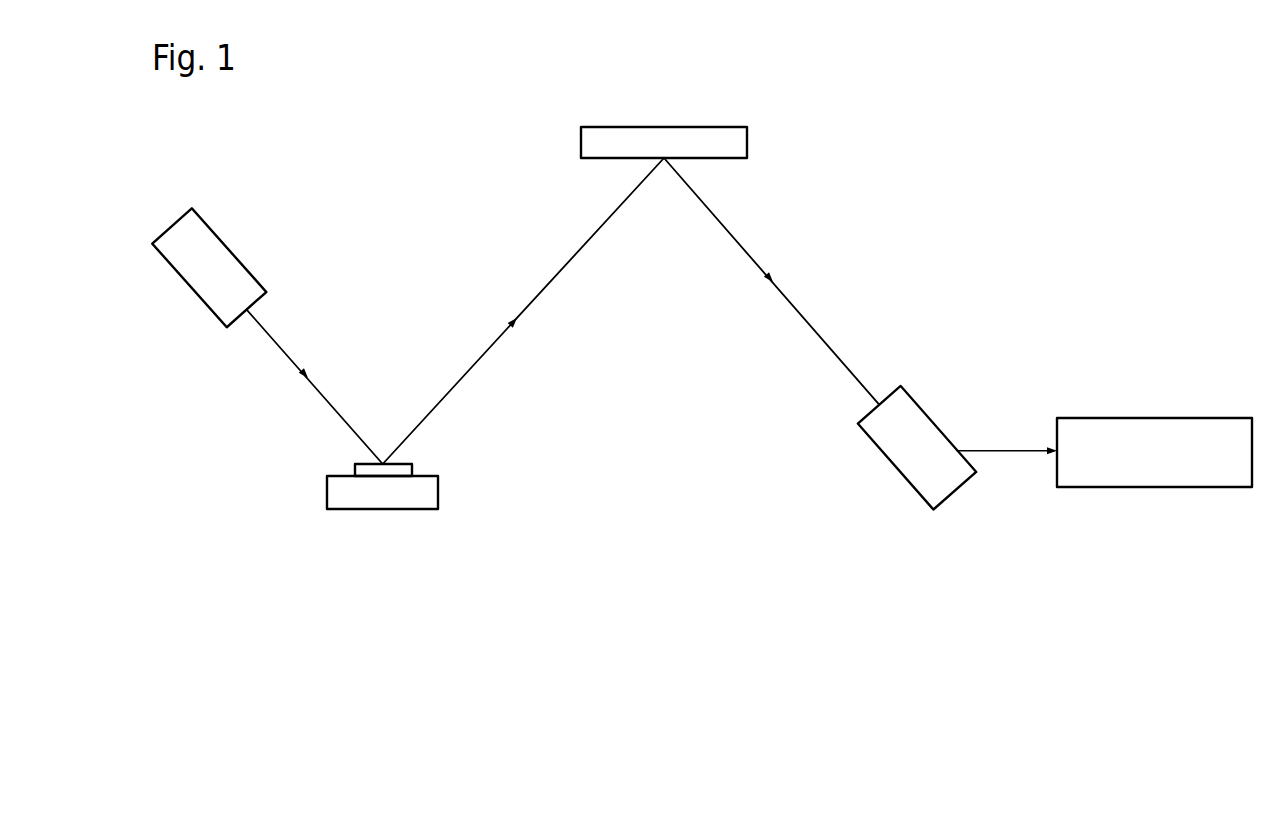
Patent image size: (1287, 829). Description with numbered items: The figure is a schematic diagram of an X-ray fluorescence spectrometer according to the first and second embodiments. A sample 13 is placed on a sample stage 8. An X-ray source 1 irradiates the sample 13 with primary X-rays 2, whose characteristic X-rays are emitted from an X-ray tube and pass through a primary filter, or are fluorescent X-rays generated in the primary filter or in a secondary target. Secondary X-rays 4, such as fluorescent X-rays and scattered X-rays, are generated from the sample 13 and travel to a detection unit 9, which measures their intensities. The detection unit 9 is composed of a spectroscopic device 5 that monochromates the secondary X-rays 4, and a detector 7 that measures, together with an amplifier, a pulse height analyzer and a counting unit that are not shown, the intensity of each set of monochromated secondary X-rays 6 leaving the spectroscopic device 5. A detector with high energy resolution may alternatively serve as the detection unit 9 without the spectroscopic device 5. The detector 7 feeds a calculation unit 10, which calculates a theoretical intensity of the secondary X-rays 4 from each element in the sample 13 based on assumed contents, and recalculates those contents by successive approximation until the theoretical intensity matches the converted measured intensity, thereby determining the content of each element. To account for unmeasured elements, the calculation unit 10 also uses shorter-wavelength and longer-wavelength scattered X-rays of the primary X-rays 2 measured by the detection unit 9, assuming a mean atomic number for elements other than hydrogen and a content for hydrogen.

The X-ray source 1 is at (218, 232).
The primary X-rays 2 is at (270, 332).
The secondary X-rays 4 is at (557, 275).
The spectroscopic device 5 is at (747, 143).
The monochromated secondary X-rays 6 is at (813, 325).
The detector 7 is at (932, 422).
The sample stage 8 is at (438, 492).
The detection unit 9 is at (886, 503).
The calculation unit 10 is at (1137, 418).
The sample 13 is at (412, 468).